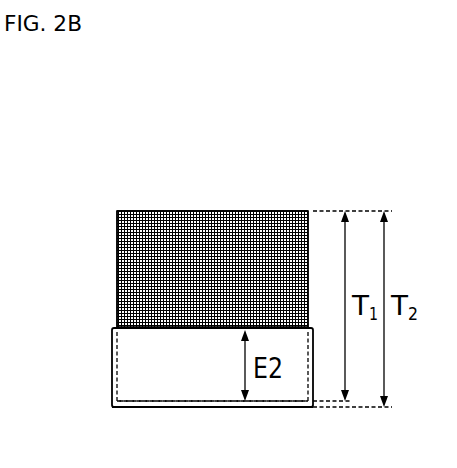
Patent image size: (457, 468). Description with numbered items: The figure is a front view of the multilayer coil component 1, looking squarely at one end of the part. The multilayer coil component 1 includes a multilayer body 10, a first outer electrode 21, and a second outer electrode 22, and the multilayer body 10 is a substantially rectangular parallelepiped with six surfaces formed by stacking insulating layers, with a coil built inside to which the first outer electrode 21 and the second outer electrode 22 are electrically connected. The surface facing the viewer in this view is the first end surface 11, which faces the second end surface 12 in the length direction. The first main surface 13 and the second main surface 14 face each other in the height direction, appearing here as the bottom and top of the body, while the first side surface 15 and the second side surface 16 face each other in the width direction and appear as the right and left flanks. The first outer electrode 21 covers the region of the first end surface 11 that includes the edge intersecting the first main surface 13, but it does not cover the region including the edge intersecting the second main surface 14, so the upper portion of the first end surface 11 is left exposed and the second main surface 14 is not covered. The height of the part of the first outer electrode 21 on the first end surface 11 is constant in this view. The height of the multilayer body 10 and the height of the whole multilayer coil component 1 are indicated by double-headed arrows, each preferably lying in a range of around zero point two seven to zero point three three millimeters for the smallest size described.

The multilayer coil component 1 is at (96, 186).
The multilayer body 10 is at (286, 203).
The first end surface 11 is at (210, 237).
The second end surface 12 is at (156, 235).
The first main surface 13 is at (205, 403).
The second main surface 14 is at (180, 210).
The first side surface 15 is at (308, 296).
The second side surface 16 is at (117, 282).
The first outer electrode 21 is at (163, 380).
The second outer electrode 22 is at (0, 393).